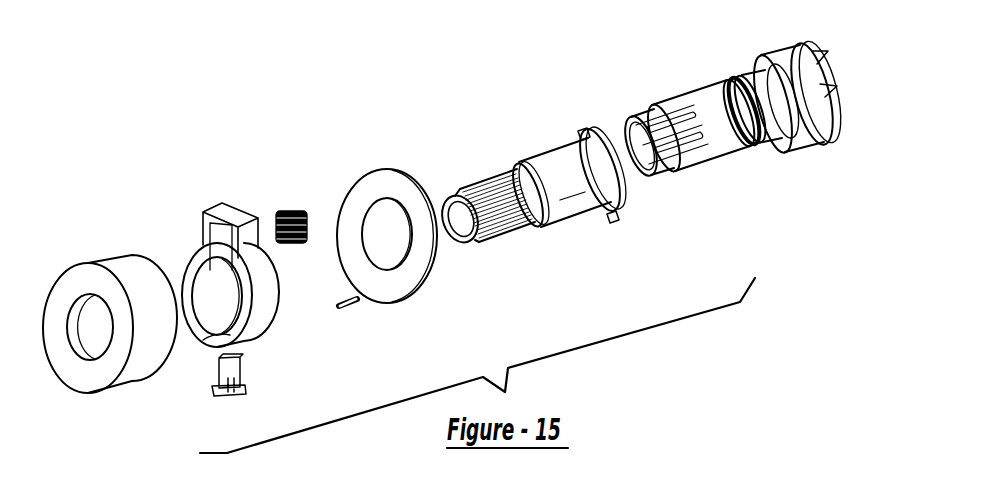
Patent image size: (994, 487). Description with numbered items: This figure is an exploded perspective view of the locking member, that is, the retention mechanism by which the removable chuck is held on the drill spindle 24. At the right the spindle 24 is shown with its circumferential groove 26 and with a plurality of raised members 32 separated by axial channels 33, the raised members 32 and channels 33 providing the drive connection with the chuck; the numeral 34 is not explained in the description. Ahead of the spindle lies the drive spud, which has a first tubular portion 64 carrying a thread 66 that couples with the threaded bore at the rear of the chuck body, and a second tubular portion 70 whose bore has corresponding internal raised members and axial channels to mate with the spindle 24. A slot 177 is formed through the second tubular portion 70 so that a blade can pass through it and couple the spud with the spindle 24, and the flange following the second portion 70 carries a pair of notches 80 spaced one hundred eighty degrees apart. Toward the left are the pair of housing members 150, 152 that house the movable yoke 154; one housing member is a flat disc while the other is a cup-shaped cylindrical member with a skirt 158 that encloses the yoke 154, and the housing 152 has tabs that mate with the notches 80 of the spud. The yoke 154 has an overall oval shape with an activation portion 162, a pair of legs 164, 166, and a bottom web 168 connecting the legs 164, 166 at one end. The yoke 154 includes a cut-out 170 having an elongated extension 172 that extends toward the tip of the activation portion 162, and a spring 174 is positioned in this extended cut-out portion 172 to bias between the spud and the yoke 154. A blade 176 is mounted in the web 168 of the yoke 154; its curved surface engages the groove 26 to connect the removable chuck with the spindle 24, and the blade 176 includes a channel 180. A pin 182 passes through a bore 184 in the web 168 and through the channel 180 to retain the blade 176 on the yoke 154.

The spindle 24 is at (722, 130).
The circumferential groove 26 is at (684, 130).
The raised members 32 is at (684, 130).
The axial channels 33 is at (684, 97).
The slot 34 is at (655, 115).
The first tubular portion 64 is at (495, 220).
The thread 66 is at (490, 185).
The second tubular portion 70 is at (584, 184).
The notches 80 is at (577, 184).
The housing member 150 is at (110, 358).
The housing member 152 is at (437, 285).
The yoke 154 is at (172, 198).
The skirt 158 is at (147, 378).
The activation portion 162 is at (224, 275).
The leg 164 is at (265, 300).
The leg 166 is at (216, 321).
The bottom web 168 is at (266, 341).
The cut-out 170 is at (216, 303).
The cut-out extension 172 is at (220, 238).
The spring 174 is at (291, 212).
The blade 176 is at (240, 362).
The slot 177 is at (552, 225).
The channel 180 is at (263, 392).
The pin 182 is at (353, 306).
The bore 184 is at (224, 303).